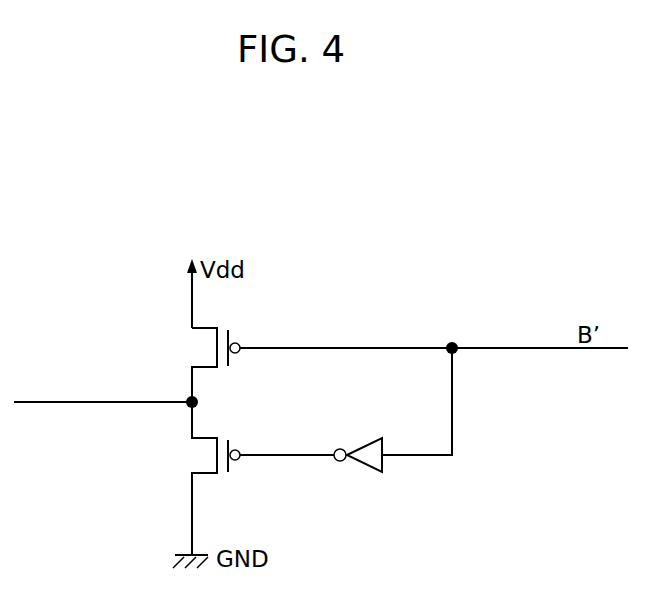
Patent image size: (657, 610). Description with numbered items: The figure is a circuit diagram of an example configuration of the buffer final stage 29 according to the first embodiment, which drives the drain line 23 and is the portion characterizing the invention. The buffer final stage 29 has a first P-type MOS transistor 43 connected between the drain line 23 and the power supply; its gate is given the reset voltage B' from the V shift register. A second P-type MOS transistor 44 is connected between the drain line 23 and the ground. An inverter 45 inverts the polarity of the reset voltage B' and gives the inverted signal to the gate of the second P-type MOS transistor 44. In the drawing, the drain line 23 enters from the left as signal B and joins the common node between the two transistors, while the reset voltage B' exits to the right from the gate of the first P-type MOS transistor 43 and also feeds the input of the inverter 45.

The buffer final stage 29 is at (432, 296).
The drain line 23 is at (38, 404).
The first P-type MOS transistor 43 is at (200, 347).
The second P-type MOS transistor 44 is at (200, 454).
The inverter 45 is at (361, 470).